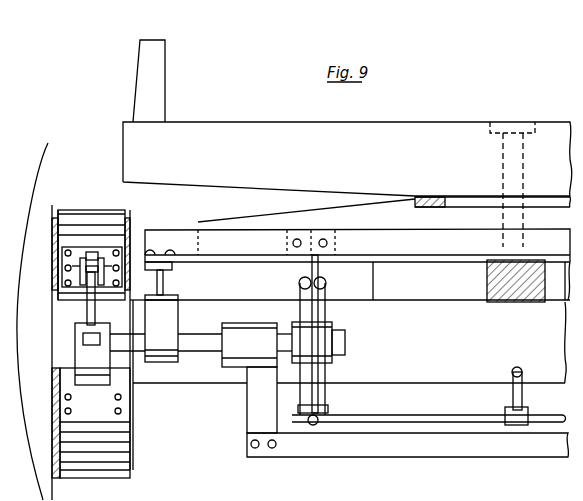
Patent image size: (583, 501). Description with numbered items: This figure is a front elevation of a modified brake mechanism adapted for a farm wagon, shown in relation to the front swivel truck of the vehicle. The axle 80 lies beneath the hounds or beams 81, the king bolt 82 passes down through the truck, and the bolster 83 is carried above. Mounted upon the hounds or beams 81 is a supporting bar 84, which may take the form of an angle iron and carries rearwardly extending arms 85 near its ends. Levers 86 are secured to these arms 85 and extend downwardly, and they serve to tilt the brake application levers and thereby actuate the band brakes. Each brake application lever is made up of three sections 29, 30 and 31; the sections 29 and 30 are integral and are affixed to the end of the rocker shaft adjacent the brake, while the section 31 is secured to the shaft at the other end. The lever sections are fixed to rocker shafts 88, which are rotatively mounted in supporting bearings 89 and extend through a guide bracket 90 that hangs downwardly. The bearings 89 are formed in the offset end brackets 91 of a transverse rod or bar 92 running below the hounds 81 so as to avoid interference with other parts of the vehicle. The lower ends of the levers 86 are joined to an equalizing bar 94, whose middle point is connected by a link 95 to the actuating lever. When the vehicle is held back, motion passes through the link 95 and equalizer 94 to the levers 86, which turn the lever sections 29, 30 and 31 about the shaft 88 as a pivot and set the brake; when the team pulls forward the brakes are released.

The lever section 29 is at (75, 336).
The lever section 30 is at (85, 362).
The lever section 31 is at (334, 340).
The axle 80 is at (422, 372).
The hounds or beams 81 is at (365, 278).
The king bolt 82 is at (506, 157).
The bolster 83 is at (278, 122).
The supporting bar 84 is at (172, 233).
The rearwardly extending arm 85 is at (308, 268).
The lever 86 is at (326, 313).
The rocker shaft 88 is at (192, 341).
The supporting bearing 89 is at (242, 345).
The guide bracket 90 is at (162, 345).
The offset end bracket 91 is at (255, 413).
The transverse rod or bar 92 is at (393, 450).
The equalizing bar 94 is at (468, 416).
The link 95 is at (522, 378).